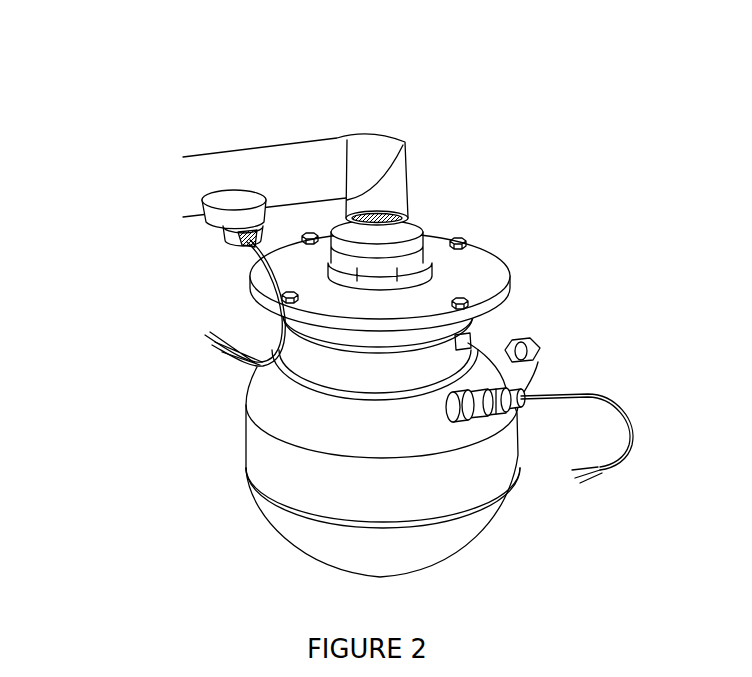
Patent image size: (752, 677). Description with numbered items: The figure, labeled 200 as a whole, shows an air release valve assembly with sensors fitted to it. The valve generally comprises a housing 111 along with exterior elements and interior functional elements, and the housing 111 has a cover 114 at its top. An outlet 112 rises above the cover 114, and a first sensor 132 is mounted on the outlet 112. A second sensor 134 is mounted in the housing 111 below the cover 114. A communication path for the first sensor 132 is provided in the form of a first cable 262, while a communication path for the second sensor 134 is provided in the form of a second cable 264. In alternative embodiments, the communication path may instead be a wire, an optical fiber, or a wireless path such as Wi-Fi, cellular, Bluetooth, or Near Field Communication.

The pump assembly 200 is at (83, 68).
The housing 111 is at (282, 445).
The outlet 112 is at (398, 190).
The cover 114 is at (478, 275).
The first sensor 132 is at (210, 230).
The second sensor 134 is at (510, 390).
The first cable 262 is at (260, 258).
The second cable 264 is at (600, 398).